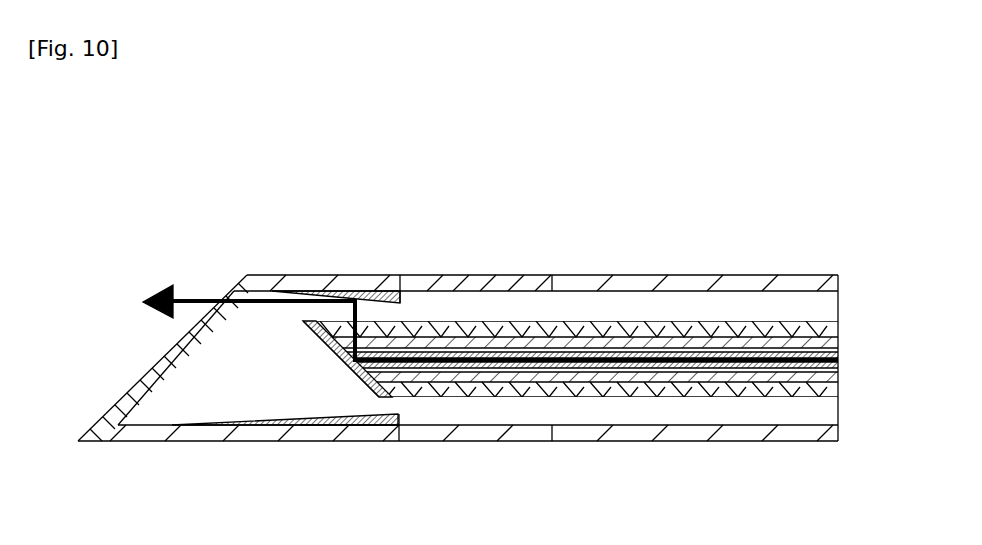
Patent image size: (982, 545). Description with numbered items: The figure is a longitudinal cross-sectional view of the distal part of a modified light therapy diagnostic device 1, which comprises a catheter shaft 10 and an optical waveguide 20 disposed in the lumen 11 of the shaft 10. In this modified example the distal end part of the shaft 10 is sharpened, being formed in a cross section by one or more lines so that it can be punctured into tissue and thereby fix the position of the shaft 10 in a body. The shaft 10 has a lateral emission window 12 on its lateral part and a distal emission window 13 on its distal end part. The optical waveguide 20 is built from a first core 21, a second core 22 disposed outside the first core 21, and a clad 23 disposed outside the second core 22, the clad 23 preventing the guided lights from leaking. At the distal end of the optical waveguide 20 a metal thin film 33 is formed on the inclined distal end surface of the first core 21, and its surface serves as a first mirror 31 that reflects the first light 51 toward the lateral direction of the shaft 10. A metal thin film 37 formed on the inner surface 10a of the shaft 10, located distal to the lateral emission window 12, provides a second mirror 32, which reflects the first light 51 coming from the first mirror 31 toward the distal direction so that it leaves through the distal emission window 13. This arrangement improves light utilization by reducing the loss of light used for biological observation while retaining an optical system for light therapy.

The light therapy diagnostic device 1 is at (173, 215).
The catheter shaft 10 is at (758, 284).
The inner surface of the shaft 10a is at (343, 425).
The lumen 11 is at (208, 385).
The lateral emission window 12 is at (442, 279).
The distal emission window 13 is at (157, 370).
The optical waveguide 20 is at (569, 288).
The first core 21 is at (568, 335).
The second core 22 is at (623, 340).
The clad 23 is at (572, 233).
The first mirror 31 is at (388, 392).
The second mirror 32 is at (366, 303).
The metal thin film 33 is at (352, 364).
The metal thin film 37 is at (356, 291).
The first light 51 is at (205, 298).